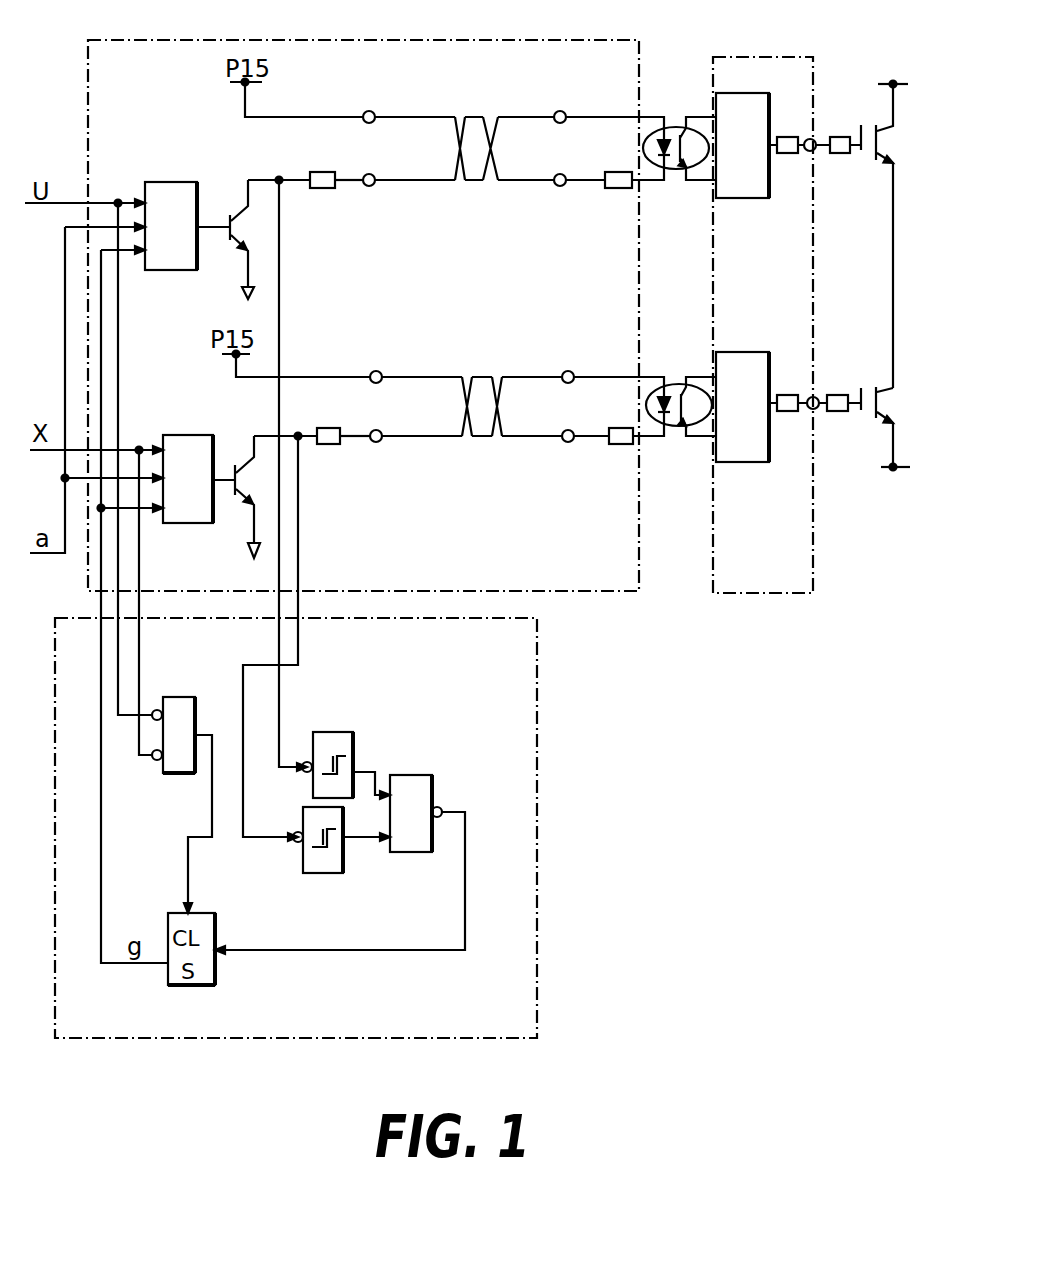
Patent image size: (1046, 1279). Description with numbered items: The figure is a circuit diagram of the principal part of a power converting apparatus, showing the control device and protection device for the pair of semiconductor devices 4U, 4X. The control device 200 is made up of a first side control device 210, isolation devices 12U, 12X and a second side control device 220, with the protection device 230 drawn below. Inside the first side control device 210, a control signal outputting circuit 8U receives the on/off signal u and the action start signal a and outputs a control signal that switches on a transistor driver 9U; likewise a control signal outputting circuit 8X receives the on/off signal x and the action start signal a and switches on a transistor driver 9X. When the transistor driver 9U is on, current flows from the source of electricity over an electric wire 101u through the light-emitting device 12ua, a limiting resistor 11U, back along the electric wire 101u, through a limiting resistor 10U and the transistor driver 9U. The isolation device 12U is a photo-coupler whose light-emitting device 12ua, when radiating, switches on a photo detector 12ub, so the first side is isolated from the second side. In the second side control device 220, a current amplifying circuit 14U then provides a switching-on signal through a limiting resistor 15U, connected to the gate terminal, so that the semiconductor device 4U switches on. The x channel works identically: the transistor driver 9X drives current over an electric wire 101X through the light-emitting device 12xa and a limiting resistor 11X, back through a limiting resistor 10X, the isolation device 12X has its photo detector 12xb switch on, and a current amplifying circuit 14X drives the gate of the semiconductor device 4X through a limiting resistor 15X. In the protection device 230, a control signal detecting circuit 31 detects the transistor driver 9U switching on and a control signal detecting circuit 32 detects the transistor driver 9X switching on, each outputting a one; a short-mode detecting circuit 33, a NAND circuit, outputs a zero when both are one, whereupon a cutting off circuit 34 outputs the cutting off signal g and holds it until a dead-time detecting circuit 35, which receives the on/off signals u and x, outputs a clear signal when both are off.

The control signal outputting circuit 8U is at (171, 210).
The transistor driver 9U is at (246, 258).
The limiting resistor 10U is at (316, 172).
The limiting resistor 11U is at (613, 172).
The isolation device 12U is at (683, 127).
The light-emitting device 12ua is at (660, 170).
The photo detector 12ub is at (684, 170).
The current amplifying circuit 14U is at (752, 95).
The limiting resistor 15U is at (840, 137).
The semiconductor device 4U is at (878, 155).
The electric wire 101u is at (510, 117).
The control signal outputting circuit 8X is at (190, 435).
The transistor driver 9X is at (239, 497).
The limiting resistor 10X is at (340, 400).
The limiting resistor 11X is at (617, 428).
The isolation device 12X is at (684, 385).
The light-emitting device 12xa is at (664, 437).
The photo detector 12xb is at (685, 428).
The current amplifying circuit 14X is at (740, 355).
The limiting resistor 15X is at (840, 395).
The semiconductor device 4X is at (878, 416).
The electric wire 101X is at (515, 377).
The control signal detecting circuit 31 is at (333, 732).
The control signal detecting circuit 32 is at (316, 873).
The short-mode detecting circuit 33 is at (410, 775).
The cutting off circuit 34 is at (218, 972).
The dead-time detecting circuit 35 is at (178, 697).
The first side control device 210 is at (586, 600).
The second side control device 220 is at (760, 602).
The protection device 230 is at (546, 778).
The control device 200 is at (792, 777).